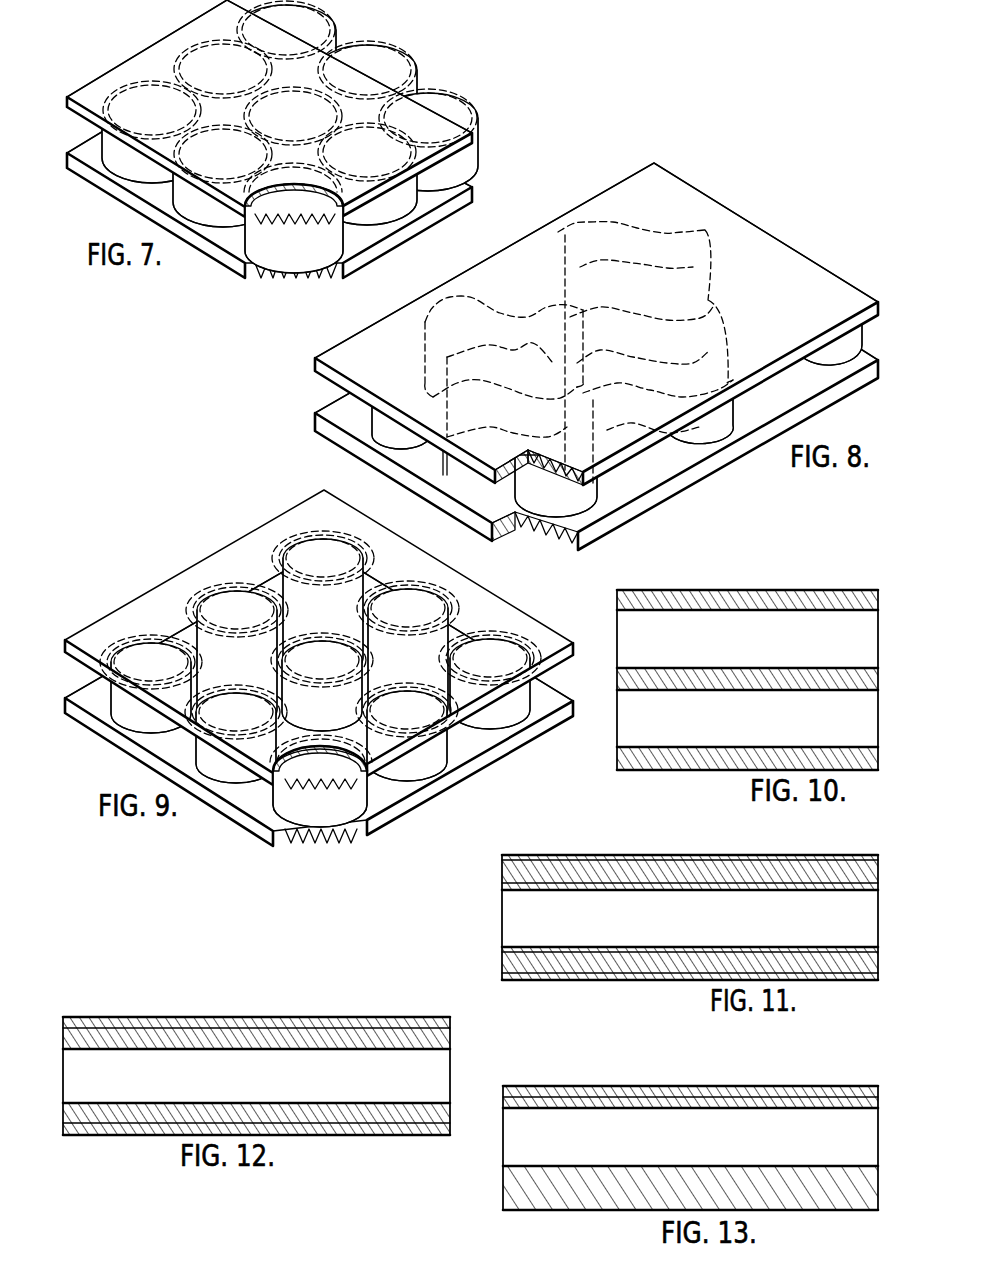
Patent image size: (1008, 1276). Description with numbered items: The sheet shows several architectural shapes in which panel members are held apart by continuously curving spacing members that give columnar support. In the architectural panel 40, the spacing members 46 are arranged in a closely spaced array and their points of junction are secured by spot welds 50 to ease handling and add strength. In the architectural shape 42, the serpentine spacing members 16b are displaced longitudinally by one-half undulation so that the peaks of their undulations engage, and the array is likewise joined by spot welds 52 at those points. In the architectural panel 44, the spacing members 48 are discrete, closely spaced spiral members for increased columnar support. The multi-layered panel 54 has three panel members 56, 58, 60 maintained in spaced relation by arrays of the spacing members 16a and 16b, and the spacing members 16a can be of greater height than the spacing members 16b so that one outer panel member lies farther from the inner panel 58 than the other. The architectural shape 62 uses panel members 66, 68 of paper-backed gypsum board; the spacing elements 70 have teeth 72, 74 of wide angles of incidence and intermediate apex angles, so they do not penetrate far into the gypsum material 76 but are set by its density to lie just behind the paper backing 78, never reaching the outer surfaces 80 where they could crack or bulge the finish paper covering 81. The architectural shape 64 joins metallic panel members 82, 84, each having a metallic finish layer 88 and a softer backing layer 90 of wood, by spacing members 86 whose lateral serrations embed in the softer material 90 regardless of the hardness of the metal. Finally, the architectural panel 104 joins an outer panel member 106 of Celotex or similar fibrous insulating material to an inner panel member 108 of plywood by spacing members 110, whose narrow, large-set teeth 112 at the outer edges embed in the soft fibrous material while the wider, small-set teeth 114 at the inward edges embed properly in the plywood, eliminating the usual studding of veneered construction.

In FIG. 7, the architectural panel 40 is at (272, 139).
In FIG. 7, the spacing members 46 is at (176, 52).
In FIG. 7, the spot welds 50 is at (187, 128).
In FIG. 8, the architectural shape 42 is at (596, 356).
In FIG. 8, the spot welds 52 is at (443, 386).
In FIG. 8, the serpentine spacing members 16b is at (596, 384).
In FIG. 10, the serpentine spacing members 16b is at (630, 723).
In FIG. 9, the architectural panel 44 is at (319, 668).
In FIG. 9, the spiral spacing members 48 is at (161, 628).
In FIG. 10, the multi-layered panel 54 is at (729, 664).
In FIG. 10, the outer panel member 56 is at (617, 598).
In FIG. 10, the spacing members 16a is at (626, 636).
In FIG. 10, the inner panel member 58 is at (617, 682).
In FIG. 10, the outer panel member 60 is at (617, 758).
In FIG. 11, the architectural shape 62 is at (672, 916).
In FIG. 11, the panel member 66 is at (672, 873).
In FIG. 11, the panel member 68 is at (672, 976).
In FIG. 11, the spacing elements 70 is at (502, 910).
In FIG. 11, the teeth 72 is at (572, 860).
In FIG. 11, the teeth 74 is at (588, 980).
In FIG. 11, the gypsum material 76 is at (612, 883).
In FIG. 11, the paper backing 78 is at (590, 890).
In FIG. 11, the outer surfaces 80 is at (645, 857).
In FIG. 11, the finish paper covering 81 is at (779, 858).
In FIG. 12, the architectural shape 64 is at (242, 1071).
In FIG. 12, the metallic panel member 82 is at (256, 1036).
In FIG. 12, the metallic panel member 84 is at (335, 1135).
In FIG. 12, the spacing members 86 is at (70, 1077).
In FIG. 12, the metallic finish layer 88 is at (397, 1022).
In FIG. 12, the backing layer 90 is at (390, 1046).
In FIG. 13, the architectural panel 104 is at (671, 1148).
In FIG. 13, the outer panel member 106 is at (596, 1210).
In FIG. 13, the inner panel member 108 is at (584, 1086).
In FIG. 13, the spacing members 110 is at (513, 1143).
In FIG. 13, the teeth 112 is at (818, 1210).
In FIG. 13, the teeth 114 is at (826, 1090).